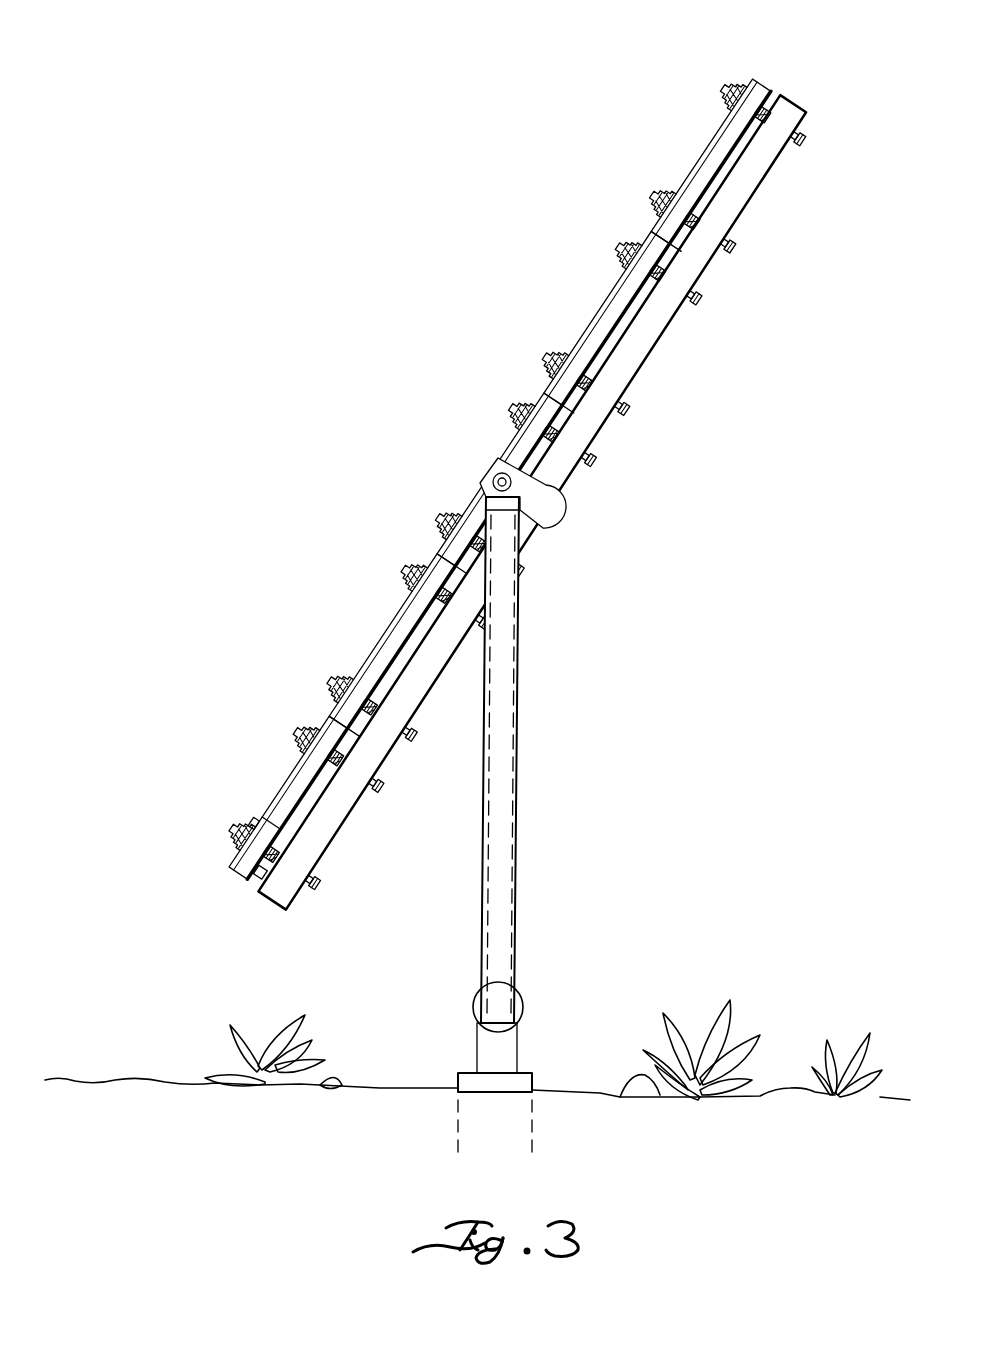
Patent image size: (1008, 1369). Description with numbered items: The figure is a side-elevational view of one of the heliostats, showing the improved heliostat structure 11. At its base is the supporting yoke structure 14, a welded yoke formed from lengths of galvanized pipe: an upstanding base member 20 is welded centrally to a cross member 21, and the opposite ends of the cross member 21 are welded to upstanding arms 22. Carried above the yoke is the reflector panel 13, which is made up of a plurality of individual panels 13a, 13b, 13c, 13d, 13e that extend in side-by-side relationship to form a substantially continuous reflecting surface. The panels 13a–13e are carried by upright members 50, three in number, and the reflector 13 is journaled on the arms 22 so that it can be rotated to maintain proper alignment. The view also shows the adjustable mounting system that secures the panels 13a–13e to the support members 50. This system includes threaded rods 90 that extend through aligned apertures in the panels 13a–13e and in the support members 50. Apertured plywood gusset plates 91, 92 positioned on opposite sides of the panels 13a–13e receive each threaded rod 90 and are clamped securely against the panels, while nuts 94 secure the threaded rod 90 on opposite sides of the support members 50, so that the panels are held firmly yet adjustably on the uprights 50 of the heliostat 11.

The heliostat structure 11 is at (514, 474).
The reflector panel 13 is at (521, 494).
The individual panel 13a is at (711, 161).
The individual panel 13b is at (607, 318).
The individual panel 13c is at (499, 479).
The individual panel 13d is at (392, 641).
The individual panel 13e is at (288, 797).
The supporting yoke structure 14 is at (525, 809).
The upstanding base member 20 is at (507, 1048).
The cross member 21 is at (520, 992).
The upstanding arm 22 is at (503, 772).
The upright member 50 is at (532, 502).
The threaded rod 90 is at (485, 463).
The gusset plate 91 is at (271, 823).
The gusset plate 92 is at (258, 848).
The nut 94 is at (537, 498).